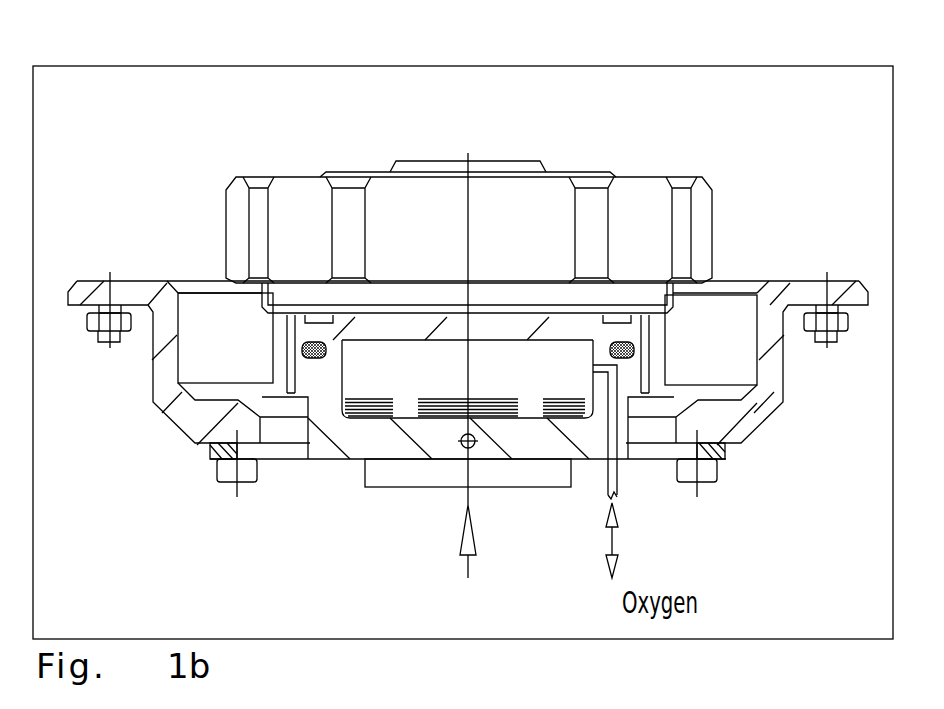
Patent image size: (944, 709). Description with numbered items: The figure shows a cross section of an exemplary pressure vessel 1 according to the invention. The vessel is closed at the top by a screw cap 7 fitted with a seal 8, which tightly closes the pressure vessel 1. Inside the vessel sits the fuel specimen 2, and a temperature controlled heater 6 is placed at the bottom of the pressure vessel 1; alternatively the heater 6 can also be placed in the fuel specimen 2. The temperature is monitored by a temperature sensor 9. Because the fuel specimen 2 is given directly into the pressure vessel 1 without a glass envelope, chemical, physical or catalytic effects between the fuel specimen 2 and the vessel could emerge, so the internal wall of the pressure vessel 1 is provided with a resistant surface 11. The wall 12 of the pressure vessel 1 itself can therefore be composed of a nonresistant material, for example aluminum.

The pressure vessel 1 is at (200, 437).
The fuel specimen 2 is at (533, 405).
The heater 6 is at (387, 473).
The screw cap 7 is at (702, 215).
The seal 8 is at (636, 340).
The temperature sensor 9 is at (468, 389).
The resistant surface 11 is at (427, 470).
The wall 12 is at (352, 375).